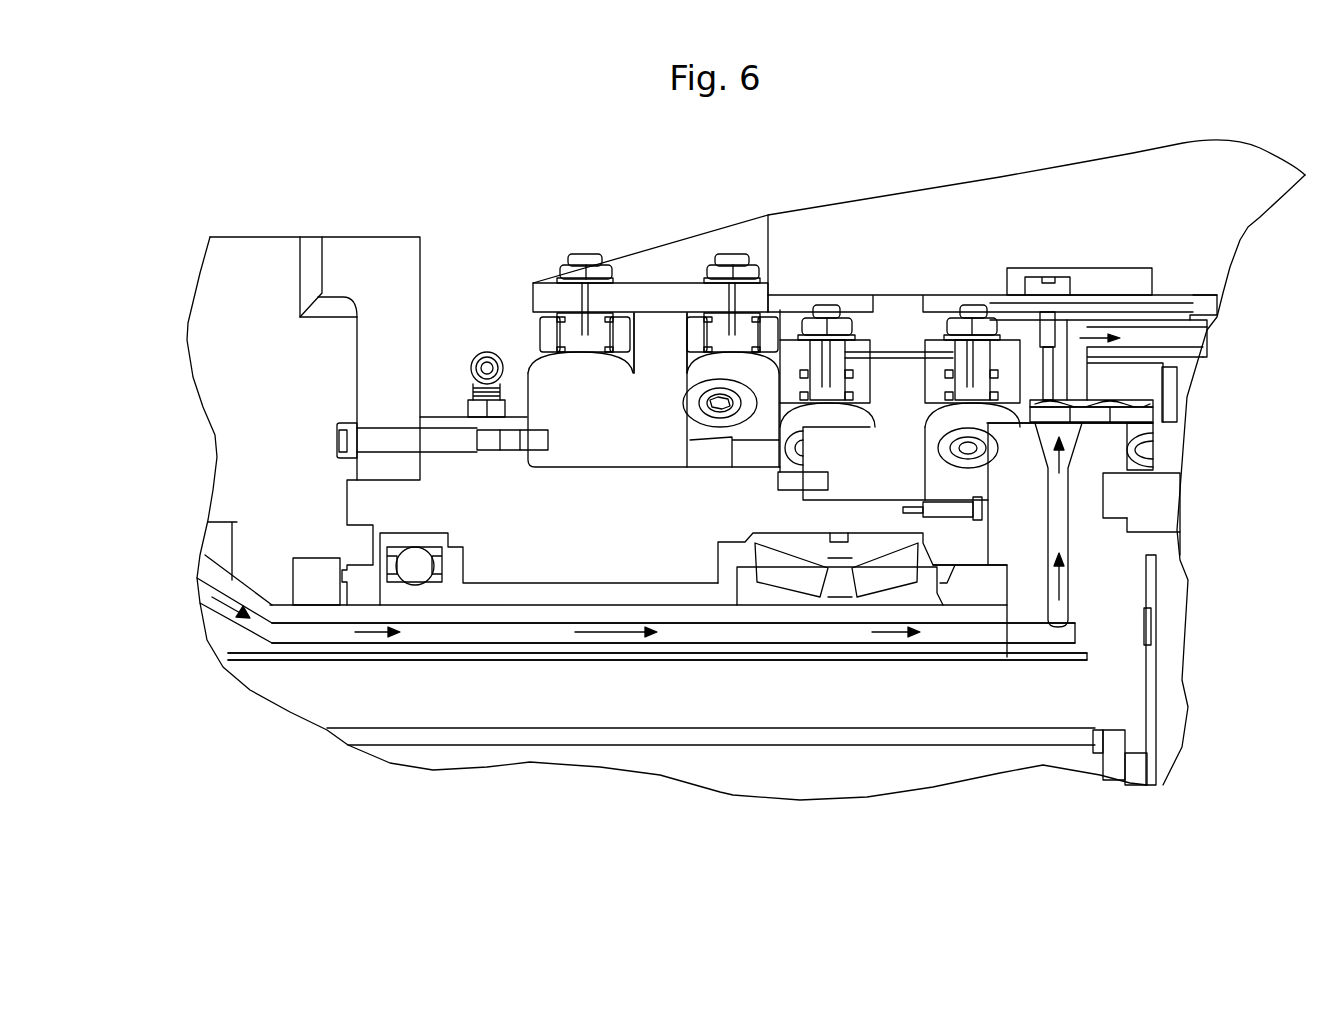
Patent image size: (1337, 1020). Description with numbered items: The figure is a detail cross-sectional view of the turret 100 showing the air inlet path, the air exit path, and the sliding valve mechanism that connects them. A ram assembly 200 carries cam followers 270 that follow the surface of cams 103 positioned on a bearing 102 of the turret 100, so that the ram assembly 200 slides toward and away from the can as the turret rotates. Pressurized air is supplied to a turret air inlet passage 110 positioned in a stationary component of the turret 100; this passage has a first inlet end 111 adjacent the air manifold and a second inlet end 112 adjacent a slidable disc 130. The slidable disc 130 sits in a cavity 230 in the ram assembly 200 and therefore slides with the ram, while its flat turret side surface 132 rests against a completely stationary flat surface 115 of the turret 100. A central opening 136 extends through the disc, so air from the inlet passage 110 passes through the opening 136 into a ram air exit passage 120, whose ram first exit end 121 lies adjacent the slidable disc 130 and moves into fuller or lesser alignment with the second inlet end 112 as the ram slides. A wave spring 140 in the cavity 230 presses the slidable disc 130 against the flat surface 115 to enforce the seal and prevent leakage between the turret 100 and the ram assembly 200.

The turret 100 is at (1070, 800).
The bearing 102 is at (497, 557).
The cams 103 is at (657, 333).
The turret air inlet passage 110 is at (570, 637).
The first inlet end 111 is at (220, 549).
The second inlet end 112 is at (1062, 470).
The flat surface 115 is at (1005, 430).
The ram air exit passage 120 is at (1180, 340).
The ram first exit end 121 is at (1072, 385).
The slidable disc 130 is at (1147, 421).
The turret side surface 132 is at (1158, 432).
The opening 136 is at (1098, 418).
The spring 140 is at (1120, 397).
The ram assembly 200 is at (854, 242).
The cavity 230 is at (1147, 403).
The cam followers 270 is at (577, 365).